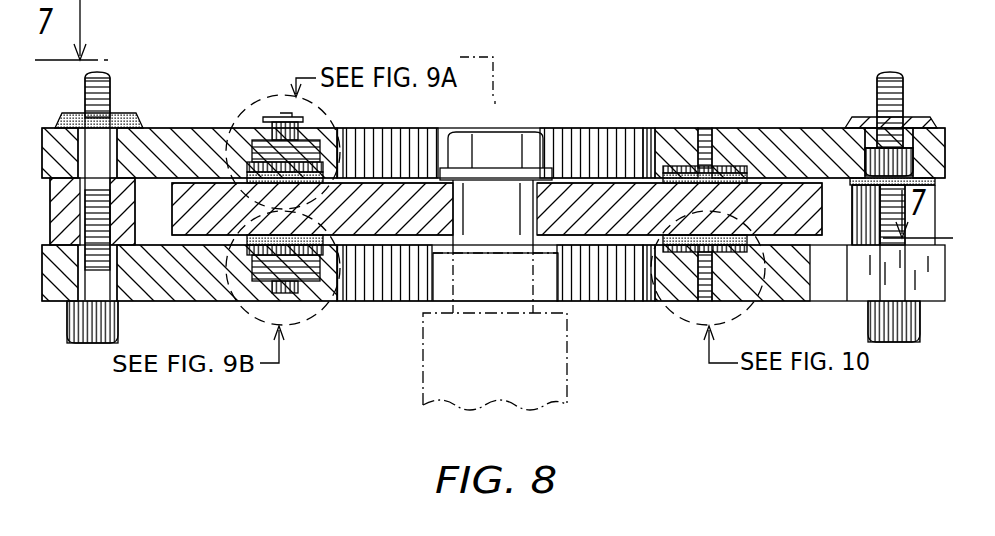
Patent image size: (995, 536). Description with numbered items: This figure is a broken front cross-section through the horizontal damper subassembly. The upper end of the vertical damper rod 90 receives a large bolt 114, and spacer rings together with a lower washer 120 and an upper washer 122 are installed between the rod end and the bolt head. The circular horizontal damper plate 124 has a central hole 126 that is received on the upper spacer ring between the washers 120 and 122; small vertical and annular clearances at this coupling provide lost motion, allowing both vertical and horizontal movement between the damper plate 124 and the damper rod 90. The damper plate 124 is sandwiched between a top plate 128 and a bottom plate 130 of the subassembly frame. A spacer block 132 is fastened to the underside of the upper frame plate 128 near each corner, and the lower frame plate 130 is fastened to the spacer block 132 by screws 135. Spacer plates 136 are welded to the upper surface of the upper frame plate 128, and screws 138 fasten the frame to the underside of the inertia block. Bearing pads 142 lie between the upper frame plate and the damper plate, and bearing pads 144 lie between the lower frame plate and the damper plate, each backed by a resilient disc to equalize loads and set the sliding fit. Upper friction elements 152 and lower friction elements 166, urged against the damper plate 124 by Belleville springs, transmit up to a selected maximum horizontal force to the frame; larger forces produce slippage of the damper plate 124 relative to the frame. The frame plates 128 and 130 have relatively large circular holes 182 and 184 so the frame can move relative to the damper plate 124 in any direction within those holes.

The vertical damper rod 90 is at (423, 407).
The bolt 114 is at (505, 125).
The lower washer 120 is at (553, 249).
The upper washer 122 is at (438, 132).
The horizontal damper plate 124 is at (615, 185).
The central hole 126 is at (531, 210).
The top plate 128 is at (812, 132).
The bottom plate 130 is at (773, 287).
The spacer block 132 is at (133, 222).
The screws 135 is at (90, 344).
The spacer plates 136 is at (118, 118).
The screws 138 is at (110, 92).
The bearing pads 142 is at (737, 166).
The bearing pads 144 is at (684, 256).
The upper friction element 152 is at (263, 106).
The lower friction element 166 is at (322, 296).
The circular hole 182 is at (649, 160).
The circular hole 184 is at (645, 285).